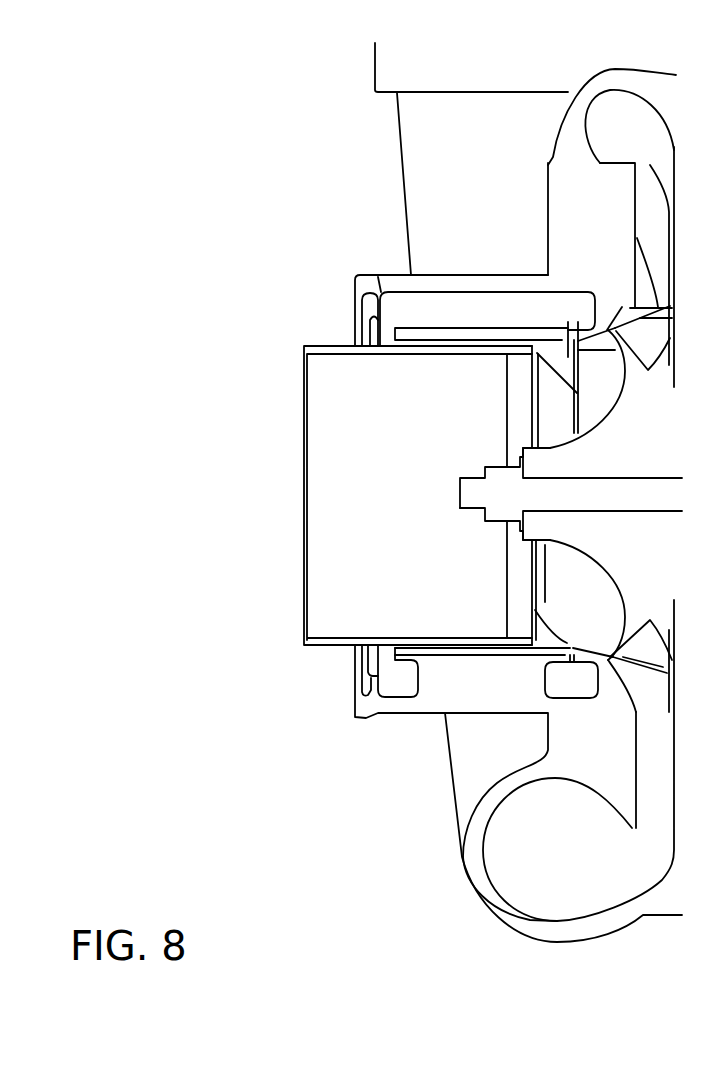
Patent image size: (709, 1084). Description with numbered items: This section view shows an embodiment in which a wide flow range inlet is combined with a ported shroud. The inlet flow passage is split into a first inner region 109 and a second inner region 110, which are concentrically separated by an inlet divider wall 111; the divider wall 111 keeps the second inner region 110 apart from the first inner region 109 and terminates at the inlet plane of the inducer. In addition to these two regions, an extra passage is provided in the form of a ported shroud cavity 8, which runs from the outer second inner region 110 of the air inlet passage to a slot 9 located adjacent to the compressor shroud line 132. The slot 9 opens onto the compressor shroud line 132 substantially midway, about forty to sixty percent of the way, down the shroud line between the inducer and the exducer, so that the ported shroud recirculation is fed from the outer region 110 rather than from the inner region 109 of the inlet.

The ported shroud cavity 8 is at (422, 303).
The slot 9 is at (567, 323).
The compressor shroud line 132 is at (613, 332).
The second inner region 110 is at (483, 347).
The inlet divider wall 111 is at (457, 638).
The first inner region 109 is at (410, 490).